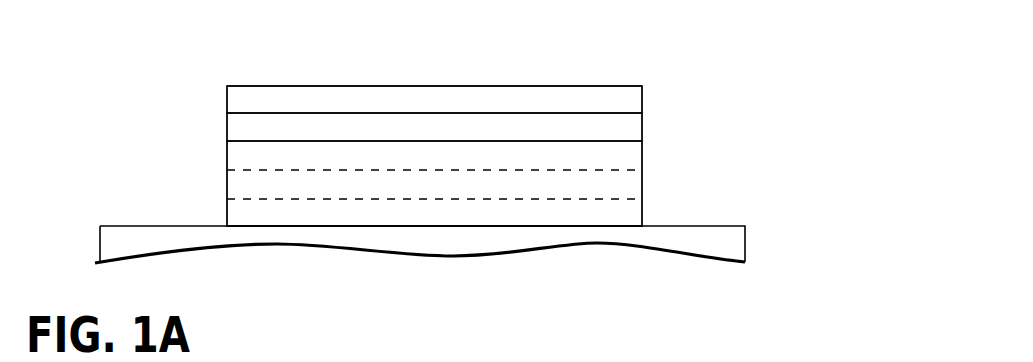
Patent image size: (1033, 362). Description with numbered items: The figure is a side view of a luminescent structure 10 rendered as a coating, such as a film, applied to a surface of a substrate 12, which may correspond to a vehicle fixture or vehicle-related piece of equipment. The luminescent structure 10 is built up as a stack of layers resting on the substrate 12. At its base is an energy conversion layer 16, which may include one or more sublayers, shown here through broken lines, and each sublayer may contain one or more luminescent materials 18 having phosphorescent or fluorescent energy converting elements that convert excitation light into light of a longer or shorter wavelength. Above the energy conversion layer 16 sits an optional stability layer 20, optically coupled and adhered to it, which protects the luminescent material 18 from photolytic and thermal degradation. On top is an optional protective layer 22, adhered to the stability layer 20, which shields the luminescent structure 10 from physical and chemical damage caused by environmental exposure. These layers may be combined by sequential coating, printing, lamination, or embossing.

The luminescent structure 10 is at (580, 62).
The substrate 12 is at (688, 225).
The energy conversion layer 16 is at (227, 180).
The luminescent material 18 is at (597, 185).
The stability layer 20 is at (227, 128).
The protective layer 22 is at (320, 86).